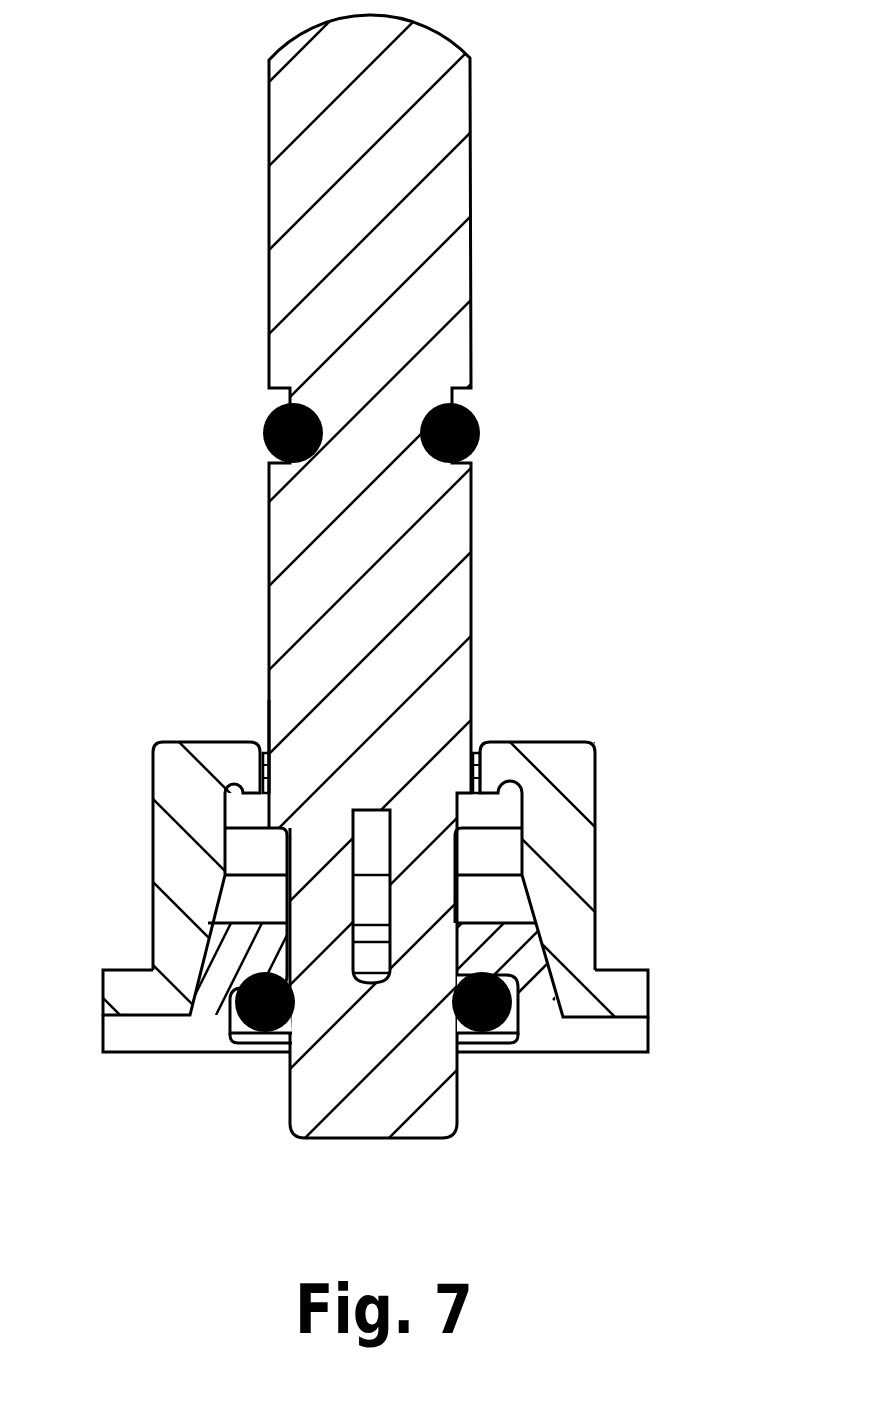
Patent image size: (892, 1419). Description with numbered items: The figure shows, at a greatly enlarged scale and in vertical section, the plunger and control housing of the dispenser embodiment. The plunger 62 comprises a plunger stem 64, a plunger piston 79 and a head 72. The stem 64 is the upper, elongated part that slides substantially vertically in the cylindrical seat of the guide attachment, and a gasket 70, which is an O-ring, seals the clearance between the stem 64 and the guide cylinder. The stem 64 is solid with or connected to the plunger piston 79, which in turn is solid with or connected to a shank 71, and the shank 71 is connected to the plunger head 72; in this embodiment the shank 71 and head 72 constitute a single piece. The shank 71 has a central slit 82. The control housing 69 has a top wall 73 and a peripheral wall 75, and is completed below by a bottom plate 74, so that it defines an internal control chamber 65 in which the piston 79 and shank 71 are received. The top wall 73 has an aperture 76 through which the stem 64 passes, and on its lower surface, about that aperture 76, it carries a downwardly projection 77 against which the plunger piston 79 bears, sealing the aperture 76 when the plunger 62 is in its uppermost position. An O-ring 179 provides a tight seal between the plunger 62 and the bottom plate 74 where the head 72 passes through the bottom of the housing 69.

The plunger 62 is at (474, 155).
The plunger stem 64 is at (380, 258).
The gasket 70 is at (478, 422).
The aperture 76 is at (292, 750).
The downwardly projection 77 is at (245, 788).
The top wall 73 is at (490, 752).
The plunger piston 79 is at (248, 818).
The shank 71 is at (420, 878).
The central slit 82 is at (372, 866).
The control housing 69 is at (598, 885).
The internal control chamber 65 is at (245, 900).
The peripheral wall 75 is at (567, 935).
The bottom plate 74 is at (137, 1042).
The O-ring 179 is at (266, 1032).
The plunger head 72 is at (427, 1098).